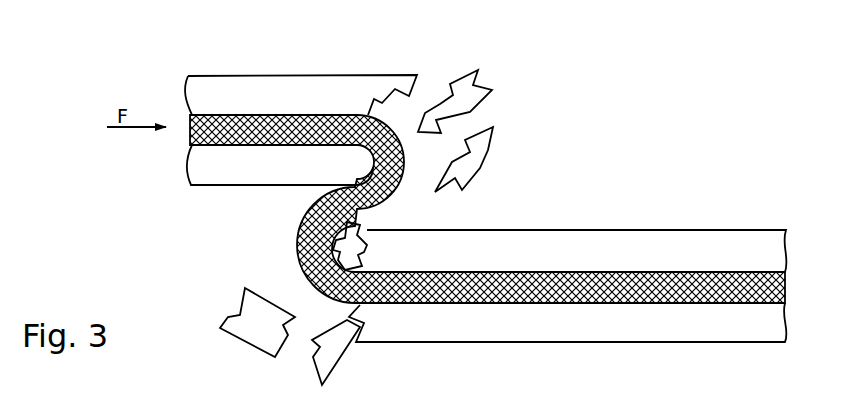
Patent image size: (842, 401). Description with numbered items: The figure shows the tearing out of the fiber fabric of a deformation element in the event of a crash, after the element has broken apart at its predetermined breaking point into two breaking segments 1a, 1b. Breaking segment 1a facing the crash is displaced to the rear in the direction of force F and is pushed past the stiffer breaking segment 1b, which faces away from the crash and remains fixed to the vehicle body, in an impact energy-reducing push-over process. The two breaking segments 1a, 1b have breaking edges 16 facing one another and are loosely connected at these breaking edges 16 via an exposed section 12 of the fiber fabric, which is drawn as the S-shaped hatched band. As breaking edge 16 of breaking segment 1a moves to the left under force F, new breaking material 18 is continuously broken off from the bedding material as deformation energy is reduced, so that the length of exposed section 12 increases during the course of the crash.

The breaking segment facing the crash 1a is at (180, 85).
The breaking segment facing away from the crash 1b is at (695, 227).
The exposed section of fiber fabric 12 is at (292, 240).
The breaking edges 16 is at (415, 85).
The breaking material 18 is at (480, 167).